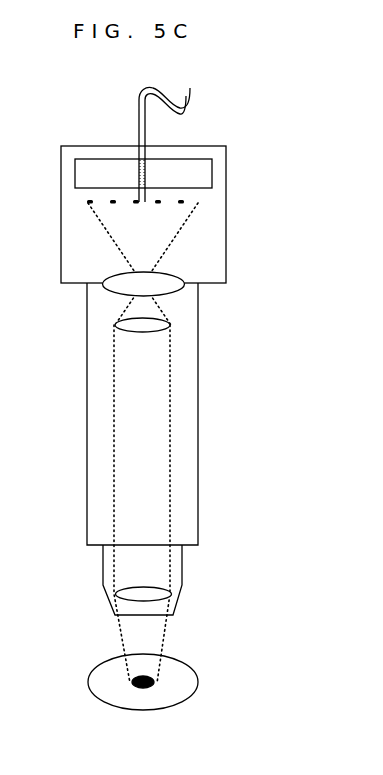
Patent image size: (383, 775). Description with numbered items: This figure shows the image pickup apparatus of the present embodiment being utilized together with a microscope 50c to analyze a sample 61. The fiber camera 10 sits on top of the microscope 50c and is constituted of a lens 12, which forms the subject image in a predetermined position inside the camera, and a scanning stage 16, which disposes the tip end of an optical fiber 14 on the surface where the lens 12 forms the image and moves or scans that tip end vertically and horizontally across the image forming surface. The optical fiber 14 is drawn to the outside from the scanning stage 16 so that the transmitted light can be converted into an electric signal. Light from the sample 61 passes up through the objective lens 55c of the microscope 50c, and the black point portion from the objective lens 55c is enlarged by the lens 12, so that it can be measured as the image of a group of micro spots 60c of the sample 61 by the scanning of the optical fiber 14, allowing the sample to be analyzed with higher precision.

The fiber camera 10 is at (226, 147).
The lens 12 is at (170, 282).
The optical fiber 14 is at (190, 97).
The scanning stage 16 is at (209, 170).
The microscope 50c is at (198, 365).
The objective lens 55c is at (165, 594).
The micro spots 60c is at (154, 686).
The sample 61 is at (178, 697).